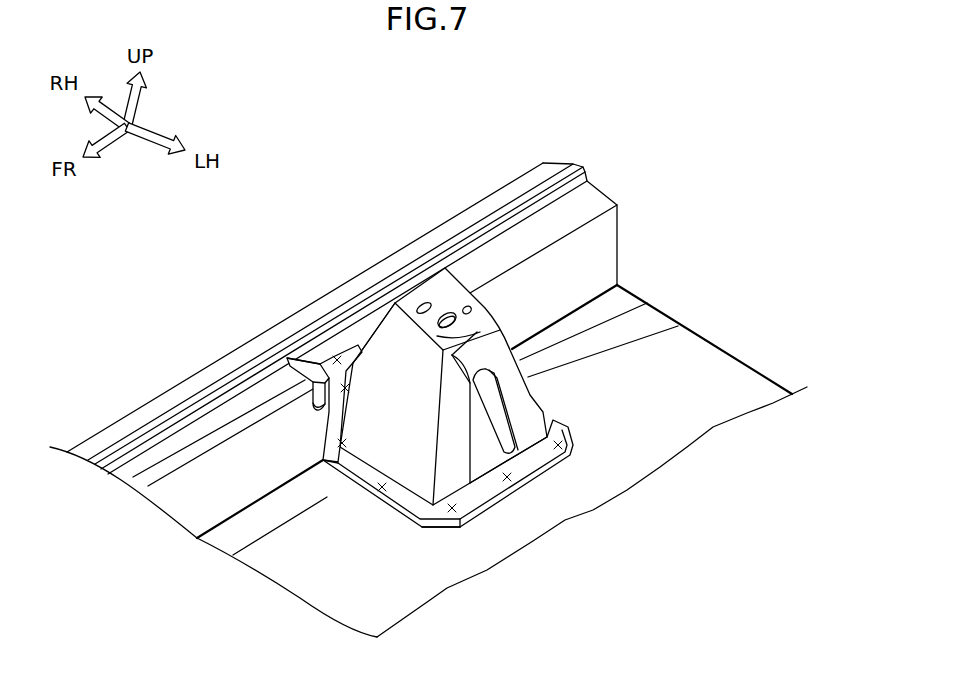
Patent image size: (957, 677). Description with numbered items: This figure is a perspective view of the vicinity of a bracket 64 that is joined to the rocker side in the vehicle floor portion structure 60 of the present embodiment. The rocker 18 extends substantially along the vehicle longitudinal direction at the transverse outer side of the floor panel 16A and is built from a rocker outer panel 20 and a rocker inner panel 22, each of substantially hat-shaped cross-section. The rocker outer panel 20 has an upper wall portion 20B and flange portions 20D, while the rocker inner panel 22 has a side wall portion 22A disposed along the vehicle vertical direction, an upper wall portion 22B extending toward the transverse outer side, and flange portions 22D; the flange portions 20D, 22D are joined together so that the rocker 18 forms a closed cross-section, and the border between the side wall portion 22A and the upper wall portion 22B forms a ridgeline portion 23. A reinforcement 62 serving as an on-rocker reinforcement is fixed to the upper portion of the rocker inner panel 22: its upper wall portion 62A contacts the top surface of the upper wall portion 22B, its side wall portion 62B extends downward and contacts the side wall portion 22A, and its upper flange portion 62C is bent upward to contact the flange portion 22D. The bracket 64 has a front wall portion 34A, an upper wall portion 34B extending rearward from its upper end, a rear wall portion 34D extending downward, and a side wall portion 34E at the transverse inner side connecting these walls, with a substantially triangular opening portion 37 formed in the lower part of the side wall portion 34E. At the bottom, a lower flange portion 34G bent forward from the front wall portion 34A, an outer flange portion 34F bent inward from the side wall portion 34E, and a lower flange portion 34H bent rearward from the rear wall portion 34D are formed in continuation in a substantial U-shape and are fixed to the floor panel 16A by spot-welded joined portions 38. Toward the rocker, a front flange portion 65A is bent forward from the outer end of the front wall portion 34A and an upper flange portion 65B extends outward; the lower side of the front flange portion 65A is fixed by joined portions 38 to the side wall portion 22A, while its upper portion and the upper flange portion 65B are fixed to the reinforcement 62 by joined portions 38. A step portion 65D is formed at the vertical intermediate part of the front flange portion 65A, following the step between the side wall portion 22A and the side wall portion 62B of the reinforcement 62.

The floor panel 16A is at (737, 370).
The rocker 18 is at (484, 184).
The rocker outer panel 20 is at (110, 420).
The upper wall portion 20B is at (88, 447).
The flange portion 20D is at (170, 407).
The rocker inner panel 22 is at (185, 500).
The side wall portion 22A is at (157, 499).
The upper wall portion 22B is at (115, 483).
The flange portion 22D is at (213, 392).
The ridgeline portion 23 is at (600, 240).
The front wall portion 34A is at (426, 528).
The upper wall portion 34B is at (437, 290).
The rear wall portion 34D is at (500, 325).
The side wall portion 34E is at (560, 485).
The outer flange portion 34F is at (493, 505).
The lower flange portion 34G is at (378, 500).
The lower flange portion 34H is at (560, 414).
The opening portion 37 is at (545, 385).
The joined portion 38 is at (330, 352).
The vehicle floor portion structure 60 is at (582, 402).
The reinforcement 62 is at (284, 380).
The upper wall portion 62A is at (345, 348).
The side wall portion 62B is at (315, 411).
The upper flange portion 62C is at (300, 357).
The bracket 64 is at (508, 510).
The front flange portion 65A is at (332, 430).
The upper flange portion 65B is at (378, 296).
The step portion 65D is at (342, 407).